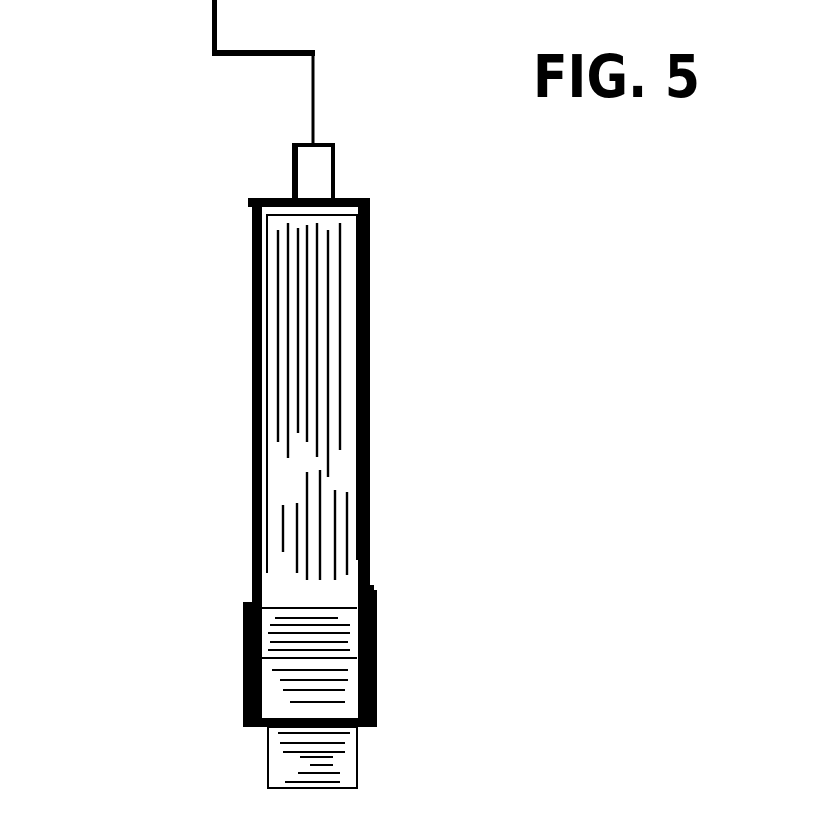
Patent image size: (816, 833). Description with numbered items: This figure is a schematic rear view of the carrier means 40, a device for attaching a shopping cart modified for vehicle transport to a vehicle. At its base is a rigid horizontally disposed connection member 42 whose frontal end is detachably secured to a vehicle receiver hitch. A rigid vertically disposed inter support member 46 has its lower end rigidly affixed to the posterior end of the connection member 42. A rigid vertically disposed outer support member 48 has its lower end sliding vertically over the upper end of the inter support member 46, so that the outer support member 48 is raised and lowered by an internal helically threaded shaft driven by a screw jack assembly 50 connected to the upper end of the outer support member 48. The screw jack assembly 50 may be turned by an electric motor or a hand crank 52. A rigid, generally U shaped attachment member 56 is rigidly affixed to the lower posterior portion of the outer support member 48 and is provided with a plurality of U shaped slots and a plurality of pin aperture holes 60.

The carrier means 40 is at (485, 320).
The connection member 42 is at (283, 764).
The inter support member 46 is at (290, 482).
The outer support member 48 is at (252, 278).
The screw jack assembly 50 is at (292, 181).
The hand crank 52 is at (207, 22).
The attachment member 56 is at (376, 690).
The pin aperture holes 60 is at (243, 630).